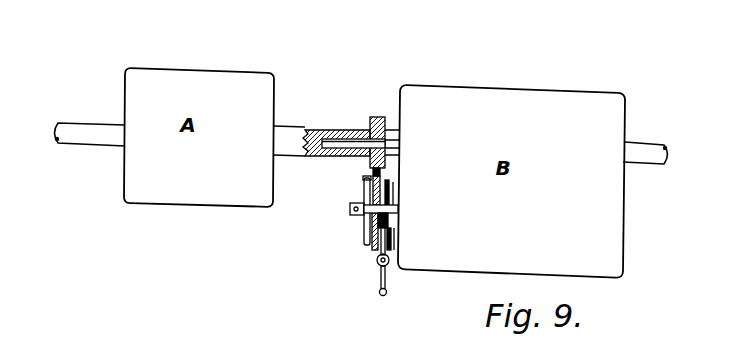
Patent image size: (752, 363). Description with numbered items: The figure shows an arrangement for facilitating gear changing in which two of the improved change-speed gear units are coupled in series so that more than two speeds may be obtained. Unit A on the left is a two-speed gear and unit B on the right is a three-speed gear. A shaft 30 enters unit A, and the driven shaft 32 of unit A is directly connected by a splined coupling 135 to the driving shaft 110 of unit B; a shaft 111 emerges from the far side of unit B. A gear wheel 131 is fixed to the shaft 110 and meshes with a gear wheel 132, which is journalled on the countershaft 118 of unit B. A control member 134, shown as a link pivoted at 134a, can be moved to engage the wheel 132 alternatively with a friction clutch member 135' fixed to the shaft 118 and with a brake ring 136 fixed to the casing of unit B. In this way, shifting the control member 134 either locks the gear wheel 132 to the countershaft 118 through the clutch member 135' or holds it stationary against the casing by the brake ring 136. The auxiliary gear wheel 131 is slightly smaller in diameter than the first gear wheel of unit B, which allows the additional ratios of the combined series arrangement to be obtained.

The input shaft 30 is at (84, 128).
The driven shaft 32 is at (286, 127).
The splined coupling 135 is at (336, 101).
The gear wheel 131 is at (381, 117).
The driving shaft 110 is at (393, 137).
The output shaft 111 is at (648, 146).
The gear wheel 132 is at (382, 175).
The friction clutch member 135' is at (334, 210).
The brake ring 136 is at (392, 188).
The countershaft 118 is at (396, 210).
The pivot 134a is at (377, 262).
The control member 134 is at (387, 292).